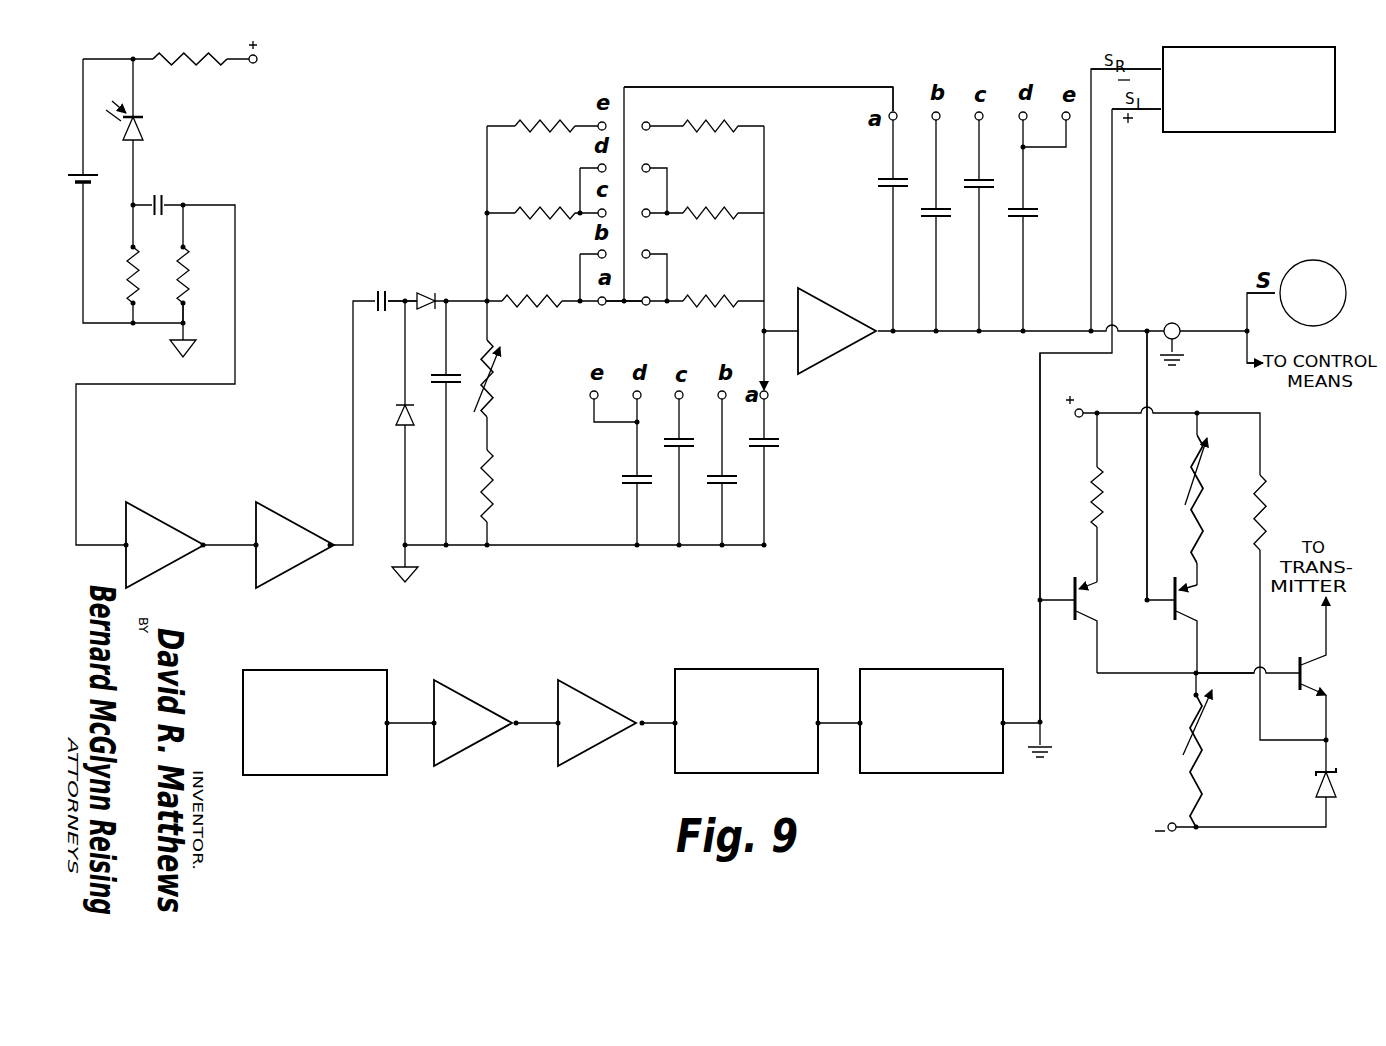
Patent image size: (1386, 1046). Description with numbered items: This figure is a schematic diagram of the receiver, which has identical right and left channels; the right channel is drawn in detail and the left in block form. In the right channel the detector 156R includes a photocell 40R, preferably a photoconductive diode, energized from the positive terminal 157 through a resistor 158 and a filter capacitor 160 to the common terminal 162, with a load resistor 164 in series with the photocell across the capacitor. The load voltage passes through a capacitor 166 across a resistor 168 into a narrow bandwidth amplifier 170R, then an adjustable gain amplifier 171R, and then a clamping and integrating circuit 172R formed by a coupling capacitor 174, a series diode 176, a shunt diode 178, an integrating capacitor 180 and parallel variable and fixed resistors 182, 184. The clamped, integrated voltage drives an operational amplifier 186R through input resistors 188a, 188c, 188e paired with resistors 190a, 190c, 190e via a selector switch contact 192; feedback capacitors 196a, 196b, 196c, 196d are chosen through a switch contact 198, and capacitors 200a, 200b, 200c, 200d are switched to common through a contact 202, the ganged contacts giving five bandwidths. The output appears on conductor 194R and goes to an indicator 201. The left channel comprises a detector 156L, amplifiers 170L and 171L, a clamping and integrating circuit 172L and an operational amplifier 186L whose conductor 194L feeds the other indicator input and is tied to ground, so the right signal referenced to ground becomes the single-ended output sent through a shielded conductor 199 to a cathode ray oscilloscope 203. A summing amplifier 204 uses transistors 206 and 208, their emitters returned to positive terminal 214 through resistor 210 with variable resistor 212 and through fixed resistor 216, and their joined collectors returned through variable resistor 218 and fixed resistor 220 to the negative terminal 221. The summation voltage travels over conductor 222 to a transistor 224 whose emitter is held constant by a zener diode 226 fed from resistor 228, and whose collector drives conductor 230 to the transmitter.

The positive terminal 157 is at (257, 63).
The resistor 158 is at (183, 63).
The detector 156R is at (142, 109).
The photocell 40R is at (144, 129).
The capacitor 166 is at (164, 204).
The filter capacitor 160 is at (92, 184).
The resistor 168 is at (184, 272).
The common terminal 162 is at (187, 323).
The load resistor 164 is at (132, 276).
The narrow bandwidth amplifier 170R is at (163, 535).
The adjustable gain amplifier 171R is at (280, 535).
The coupling capacitor 174 is at (374, 297).
The clamping and integrating circuit 172R is at (406, 292).
The series diode 176 is at (424, 297).
The shunt diode 178 is at (403, 428).
The integrating capacitor 180 is at (450, 384).
The variable resistor 182 is at (490, 380).
The fixed resistor 184 is at (493, 490).
The input resistor 188a is at (543, 300).
The input resistor 188c is at (547, 211).
The input resistor 188e is at (543, 124).
The input resistor 190a is at (690, 303).
The input resistor 190c is at (715, 215).
The input resistor 190e is at (715, 128).
The selector switch contact 192 is at (623, 303).
The selector switch contact 202 is at (770, 384).
The capacitor 200a is at (770, 450).
The capacitor 200b is at (728, 487).
The capacitor 200c is at (672, 448).
The capacitor 200d is at (628, 487).
The operational amplifier 186R is at (822, 292).
The feedback capacitor 196a is at (888, 186).
The feedback capacitor 196b is at (932, 217).
The feedback capacitor 196c is at (976, 188).
The feedback capacitor 196d is at (1026, 217).
The selector switch contact 198 is at (893, 90).
The conductor 194R is at (1003, 333).
The shielded conductor 199 is at (1178, 323).
The indicator 201 is at (1303, 128).
The cathode ray oscilloscope 203 is at (1335, 277).
The summing amplifier 204 is at (1190, 409).
The positive terminal 214 is at (1082, 409).
The fixed resistor 216 is at (1096, 495).
The variable resistor 212 is at (1200, 482).
The resistor 228 is at (1265, 502).
The resistor 210 is at (1198, 570).
The transistor 206 is at (1173, 620).
The transistor 208 is at (1074, 625).
The conductor 222 is at (1208, 672).
The conductor 230 is at (1324, 640).
The transistor 224 is at (1300, 690).
The variable resistor 218 is at (1190, 706).
The fixed resistor 220 is at (1190, 776).
The negative terminal 221 is at (1175, 833).
The zener diode 226 is at (1315, 788).
The conductor 194L is at (1040, 615).
The detector 156L is at (338, 760).
The bandwidth determining amplifier 170L is at (472, 706).
The adjustable gain amplifier 171L is at (590, 706).
The clamping and integrating circuit 172L is at (792, 680).
The operational amplifier 186L is at (968, 766).